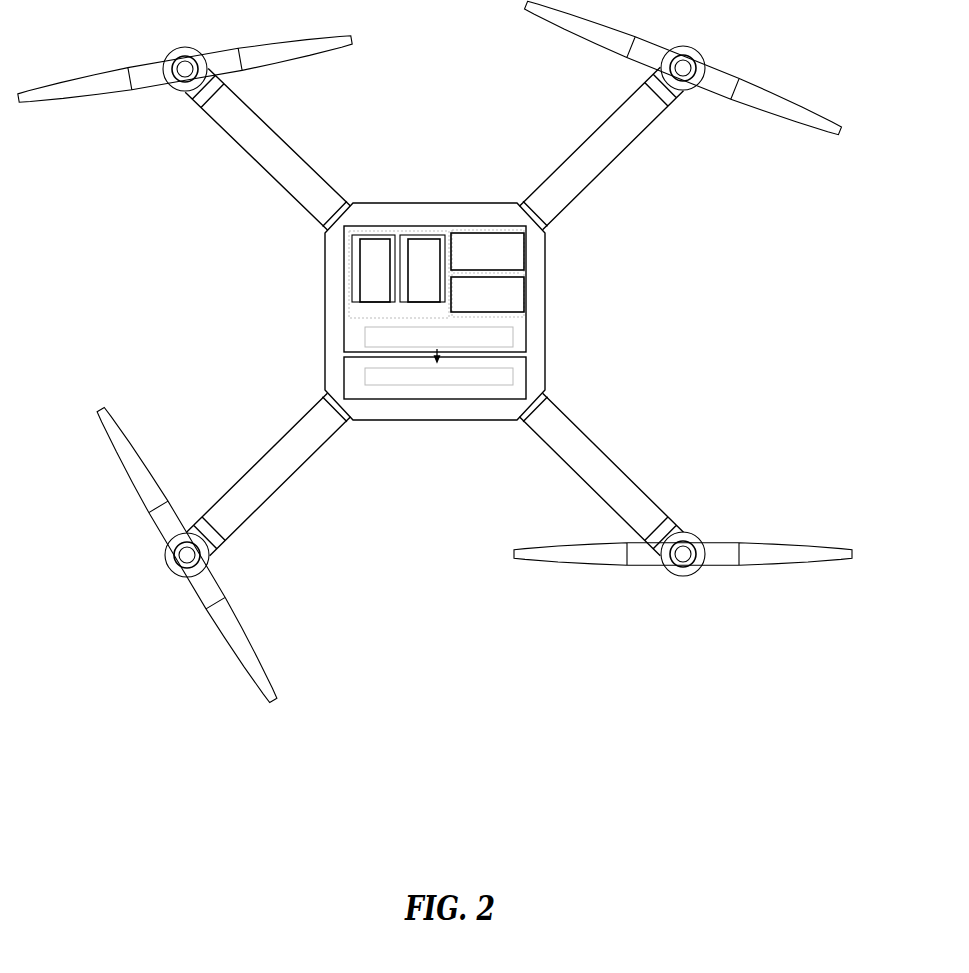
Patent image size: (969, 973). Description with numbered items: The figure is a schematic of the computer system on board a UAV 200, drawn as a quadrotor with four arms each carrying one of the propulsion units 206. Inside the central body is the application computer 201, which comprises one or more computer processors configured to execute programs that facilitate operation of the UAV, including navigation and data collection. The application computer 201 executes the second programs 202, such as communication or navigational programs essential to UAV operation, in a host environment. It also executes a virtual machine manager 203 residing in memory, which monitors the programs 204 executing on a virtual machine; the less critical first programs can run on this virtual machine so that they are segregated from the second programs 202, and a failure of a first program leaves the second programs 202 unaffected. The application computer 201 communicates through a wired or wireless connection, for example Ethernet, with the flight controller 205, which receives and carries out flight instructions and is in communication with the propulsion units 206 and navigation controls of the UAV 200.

The UAV 200 is at (265, 272).
The application computer 201 is at (439, 335).
The second programs 202 is at (487, 273).
The virtual machine manager 203 is at (360, 312).
The programs executing on a virtual machine 204 is at (398, 269).
The flight controller 205 is at (435, 378).
The propulsion units 206 is at (568, 35).